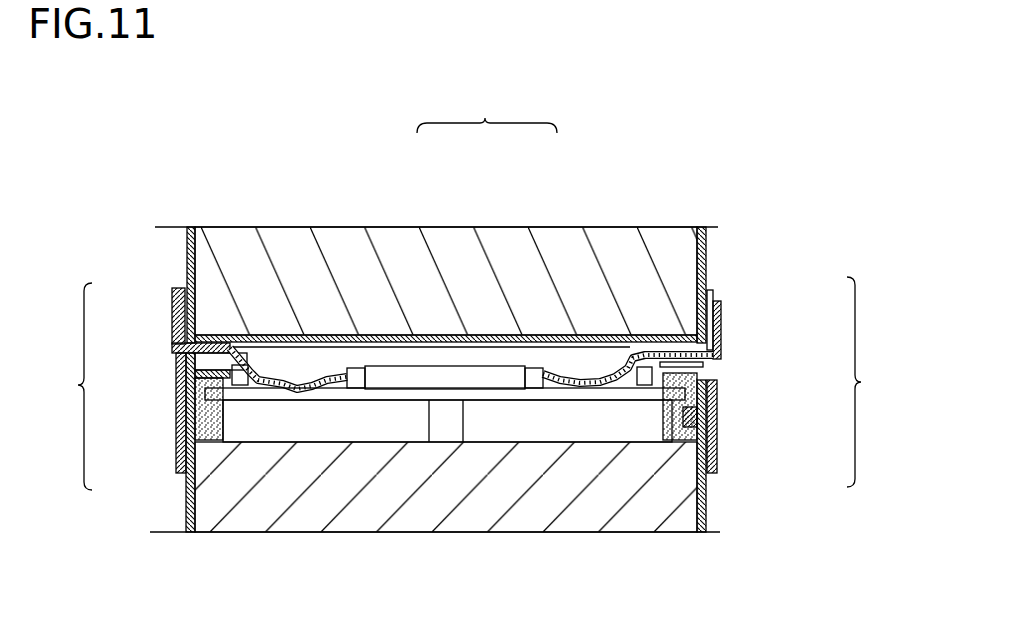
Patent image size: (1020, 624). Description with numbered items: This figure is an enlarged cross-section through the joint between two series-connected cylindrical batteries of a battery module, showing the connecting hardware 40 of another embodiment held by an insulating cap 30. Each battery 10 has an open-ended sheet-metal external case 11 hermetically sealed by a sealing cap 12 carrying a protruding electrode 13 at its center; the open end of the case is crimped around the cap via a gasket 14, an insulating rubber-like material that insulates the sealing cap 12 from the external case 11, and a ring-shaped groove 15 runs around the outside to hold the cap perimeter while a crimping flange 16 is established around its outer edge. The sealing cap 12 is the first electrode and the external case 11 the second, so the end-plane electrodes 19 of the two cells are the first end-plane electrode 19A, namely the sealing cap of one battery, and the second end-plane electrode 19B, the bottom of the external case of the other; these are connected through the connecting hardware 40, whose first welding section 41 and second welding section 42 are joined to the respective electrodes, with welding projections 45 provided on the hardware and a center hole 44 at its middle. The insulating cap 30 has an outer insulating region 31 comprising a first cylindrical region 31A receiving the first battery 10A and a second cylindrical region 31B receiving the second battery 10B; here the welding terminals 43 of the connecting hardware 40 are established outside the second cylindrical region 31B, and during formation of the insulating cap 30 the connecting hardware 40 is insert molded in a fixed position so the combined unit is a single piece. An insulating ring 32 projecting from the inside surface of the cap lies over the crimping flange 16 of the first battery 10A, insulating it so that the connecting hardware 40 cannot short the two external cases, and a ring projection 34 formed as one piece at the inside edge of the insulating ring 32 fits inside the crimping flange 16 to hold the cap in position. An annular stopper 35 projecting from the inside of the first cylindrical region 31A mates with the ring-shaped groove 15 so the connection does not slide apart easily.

The battery 10 is at (435, 379).
The first battery 10A is at (715, 513).
The second battery 10B is at (713, 238).
The external case 11 is at (703, 256).
The sealing cap 12 is at (463, 442).
The protruding electrode 13 is at (418, 378).
The gasket 14 is at (640, 382).
The ring-shaped groove 15 is at (610, 395).
The crimping flange 16 is at (700, 395).
The end-plane electrode 19 is at (562, 238).
The first end-plane electrode 19A is at (540, 335).
The second end-plane electrode 19B is at (483, 335).
The insulating cap 30 is at (466, 355).
The outer insulating region 31 is at (468, 383).
The first cylindrical region 31A is at (178, 447).
The second cylindrical region 31B is at (175, 293).
The insulating ring 32 is at (668, 355).
The ring projection 34 is at (633, 357).
The annular stopper 35 is at (694, 432).
The connecting hardware 40 is at (303, 355).
The first welding section 41 is at (327, 390).
The second welding section 42 is at (213, 348).
The welding terminals 43 is at (177, 342).
The center hole 44 is at (357, 370).
The welding projections 45 is at (253, 362).